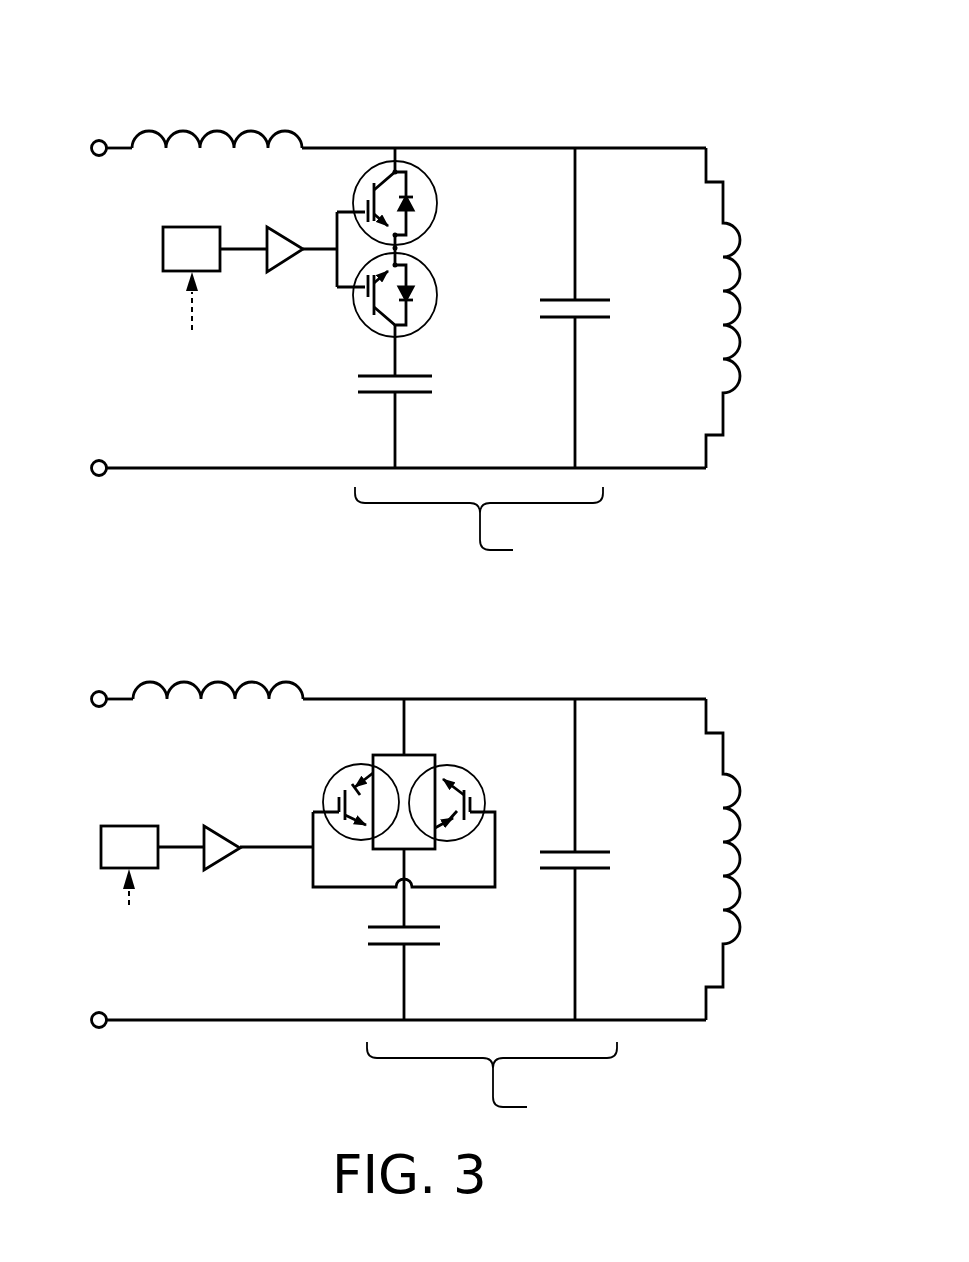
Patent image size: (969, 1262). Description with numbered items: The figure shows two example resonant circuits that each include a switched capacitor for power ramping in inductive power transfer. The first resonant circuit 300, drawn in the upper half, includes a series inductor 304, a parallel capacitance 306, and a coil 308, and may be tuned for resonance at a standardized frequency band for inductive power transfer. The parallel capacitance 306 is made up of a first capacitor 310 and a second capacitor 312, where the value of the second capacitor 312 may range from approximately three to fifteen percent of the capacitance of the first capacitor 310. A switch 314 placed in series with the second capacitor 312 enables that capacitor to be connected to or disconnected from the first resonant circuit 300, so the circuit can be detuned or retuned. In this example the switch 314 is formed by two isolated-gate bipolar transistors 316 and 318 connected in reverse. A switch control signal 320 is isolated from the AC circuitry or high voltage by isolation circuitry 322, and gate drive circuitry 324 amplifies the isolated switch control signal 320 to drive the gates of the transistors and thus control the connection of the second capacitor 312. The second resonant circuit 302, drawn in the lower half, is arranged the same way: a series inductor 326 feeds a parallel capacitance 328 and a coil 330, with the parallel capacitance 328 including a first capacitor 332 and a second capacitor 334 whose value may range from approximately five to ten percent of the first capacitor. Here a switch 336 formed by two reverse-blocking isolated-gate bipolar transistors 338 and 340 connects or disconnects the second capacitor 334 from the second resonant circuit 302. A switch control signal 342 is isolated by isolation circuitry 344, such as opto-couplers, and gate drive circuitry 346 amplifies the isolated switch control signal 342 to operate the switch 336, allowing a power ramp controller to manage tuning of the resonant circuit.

The first resonant circuit 300 is at (690, 45).
The second resonant circuit 302 is at (690, 590).
The series inductor 304 is at (203, 105).
The parallel capacitance 306 is at (437, 358).
The coil 308 is at (735, 160).
The first capacitor 310 is at (603, 336).
The second capacitor 312 is at (413, 416).
The switch 314 is at (345, 334).
The isolated-gate bipolar transistor 316 is at (445, 182).
The isolated-gate bipolar transistor 318 is at (445, 267).
The switch control signal 320 is at (173, 412).
The isolation circuitry 322 is at (160, 214).
The gate drive circuitry 324 is at (263, 214).
The series inductor 326 is at (188, 658).
The parallel capacitance 328 is at (427, 917).
The coil 330 is at (736, 708).
The first capacitor 332 is at (603, 888).
The second capacitor 334 is at (428, 972).
The switch 336 is at (310, 902).
The reverse-blocking isolated-gate bipolar transistor 338 is at (328, 746).
The reverse-blocking isolated-gate bipolar transistor 340 is at (484, 760).
The switch control signal 342 is at (110, 981).
The isolation circuitry 344 is at (94, 808).
The gate drive circuitry 346 is at (196, 808).